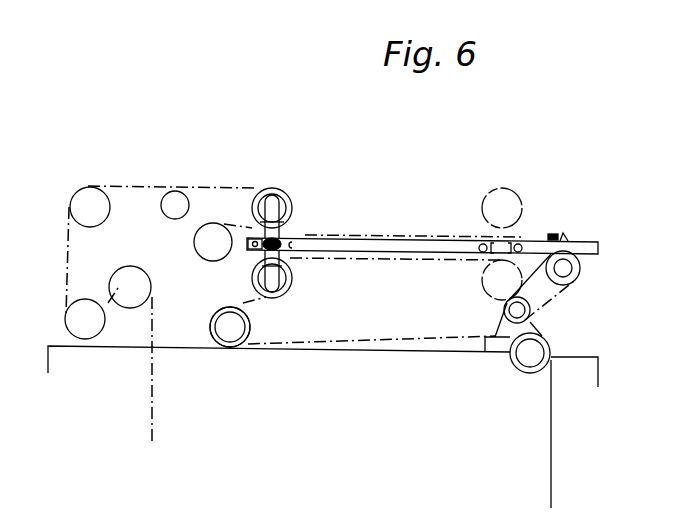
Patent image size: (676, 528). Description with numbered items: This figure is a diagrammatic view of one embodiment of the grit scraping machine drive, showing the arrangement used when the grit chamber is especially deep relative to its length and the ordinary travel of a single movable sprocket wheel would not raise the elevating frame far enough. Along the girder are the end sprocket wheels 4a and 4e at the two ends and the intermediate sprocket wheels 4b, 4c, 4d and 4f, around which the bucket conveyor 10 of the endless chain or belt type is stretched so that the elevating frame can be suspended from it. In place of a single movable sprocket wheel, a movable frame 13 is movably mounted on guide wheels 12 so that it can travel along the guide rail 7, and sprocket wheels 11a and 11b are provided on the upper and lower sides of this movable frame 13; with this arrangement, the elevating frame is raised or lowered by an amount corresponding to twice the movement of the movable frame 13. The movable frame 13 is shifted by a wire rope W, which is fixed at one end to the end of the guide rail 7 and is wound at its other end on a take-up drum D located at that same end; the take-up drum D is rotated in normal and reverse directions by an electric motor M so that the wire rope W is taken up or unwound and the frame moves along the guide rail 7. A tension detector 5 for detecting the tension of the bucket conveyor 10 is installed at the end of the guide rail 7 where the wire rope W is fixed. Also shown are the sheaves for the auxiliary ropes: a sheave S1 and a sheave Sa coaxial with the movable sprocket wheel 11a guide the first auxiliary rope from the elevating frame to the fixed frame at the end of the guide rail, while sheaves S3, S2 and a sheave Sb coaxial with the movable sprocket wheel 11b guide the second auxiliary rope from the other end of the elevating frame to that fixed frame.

The end sprocket wheel 4a is at (80, 318).
The sprocket wheel 4b is at (80, 206).
The sprocket wheel 4c is at (196, 245).
The sprocket wheel 4d is at (222, 346).
The end sprocket wheel 4e is at (546, 345).
The sprocket wheel 4f is at (130, 280).
The sheave S1 is at (175, 200).
The sheave S2 is at (211, 322).
The sheave S3 is at (522, 362).
The sheave Sa is at (257, 188).
The sheave Sb is at (278, 278).
The movable sprocket wheel 11a is at (282, 197).
The movable sprocket wheel 11b is at (278, 298).
The guide wheels 12 is at (300, 243).
The movable frame 13 is at (273, 213).
The guide rail 7 is at (433, 246).
The tension detector 5 is at (553, 234).
The wire rope W is at (390, 236).
The take-up drum D is at (572, 268).
The electric motor M is at (509, 311).
The bucket conveyor 10 is at (552, 458).